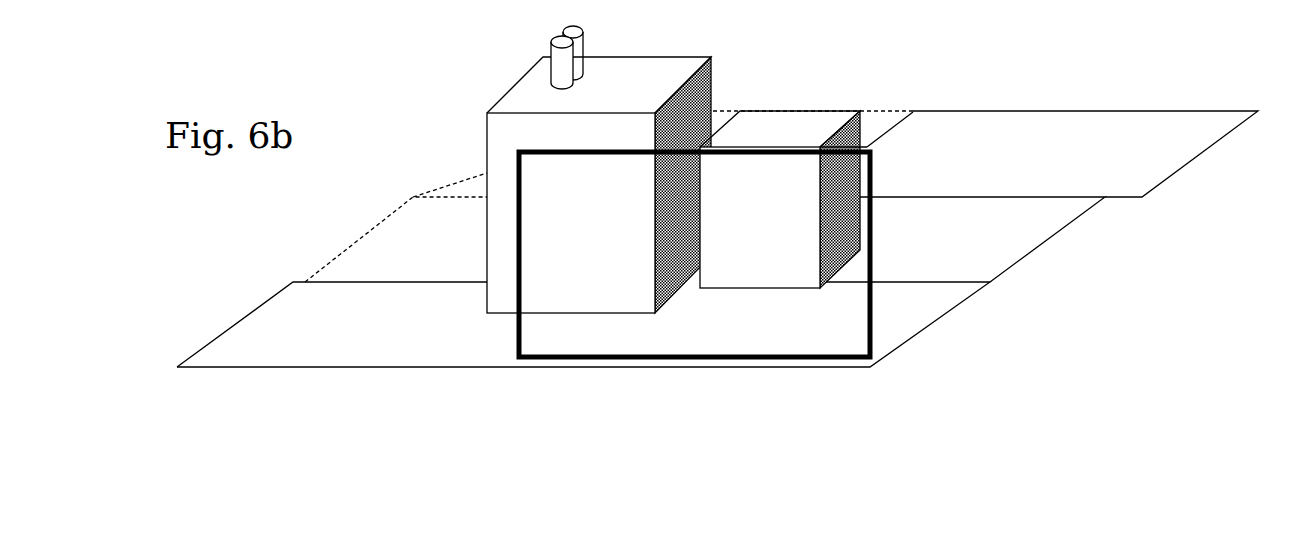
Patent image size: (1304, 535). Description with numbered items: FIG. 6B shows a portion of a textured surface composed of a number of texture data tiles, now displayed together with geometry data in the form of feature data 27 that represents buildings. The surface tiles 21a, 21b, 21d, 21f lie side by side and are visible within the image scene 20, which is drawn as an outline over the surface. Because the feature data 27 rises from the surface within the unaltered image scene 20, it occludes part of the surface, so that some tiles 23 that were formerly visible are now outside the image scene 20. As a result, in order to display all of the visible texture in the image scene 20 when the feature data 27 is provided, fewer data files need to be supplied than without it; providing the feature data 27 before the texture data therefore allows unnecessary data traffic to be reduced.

The image scene 20 is at (587, 313).
The tile 21a is at (277, 323).
The tile 21b is at (902, 318).
The tile 21d is at (1018, 233).
The tile 21f is at (1150, 158).
The tiles outside the image scene 23 is at (392, 248).
The feature data 27 is at (538, 94).